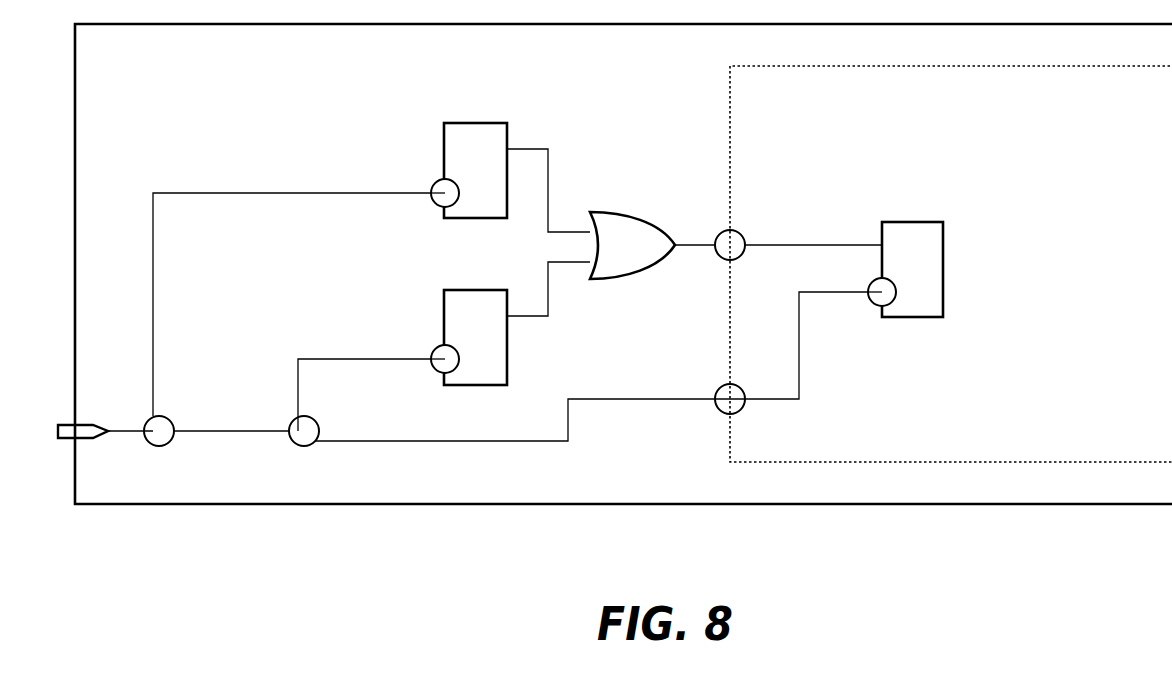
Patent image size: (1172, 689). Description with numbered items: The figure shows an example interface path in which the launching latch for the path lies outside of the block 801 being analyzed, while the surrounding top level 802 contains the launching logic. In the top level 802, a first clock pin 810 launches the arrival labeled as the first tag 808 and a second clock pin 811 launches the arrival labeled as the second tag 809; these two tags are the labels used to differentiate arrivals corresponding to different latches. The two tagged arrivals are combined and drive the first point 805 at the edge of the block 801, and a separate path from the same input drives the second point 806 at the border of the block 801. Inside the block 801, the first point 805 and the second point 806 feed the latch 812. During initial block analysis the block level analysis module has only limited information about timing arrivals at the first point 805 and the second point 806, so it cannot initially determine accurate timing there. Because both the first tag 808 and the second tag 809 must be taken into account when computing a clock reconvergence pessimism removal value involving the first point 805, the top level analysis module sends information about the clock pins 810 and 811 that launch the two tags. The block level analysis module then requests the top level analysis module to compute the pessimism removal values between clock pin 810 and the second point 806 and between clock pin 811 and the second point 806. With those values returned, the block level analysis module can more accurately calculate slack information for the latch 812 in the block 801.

The block 801 is at (951, 264).
The top level 802 is at (623, 264).
The point 1 805 is at (731, 230).
The point 2 806 is at (740, 410).
The tag 1 808 is at (532, 149).
The tag 2 809 is at (523, 316).
The clock pin 810 is at (436, 186).
The clock pin 811 is at (432, 350).
The latch 812 is at (913, 222).